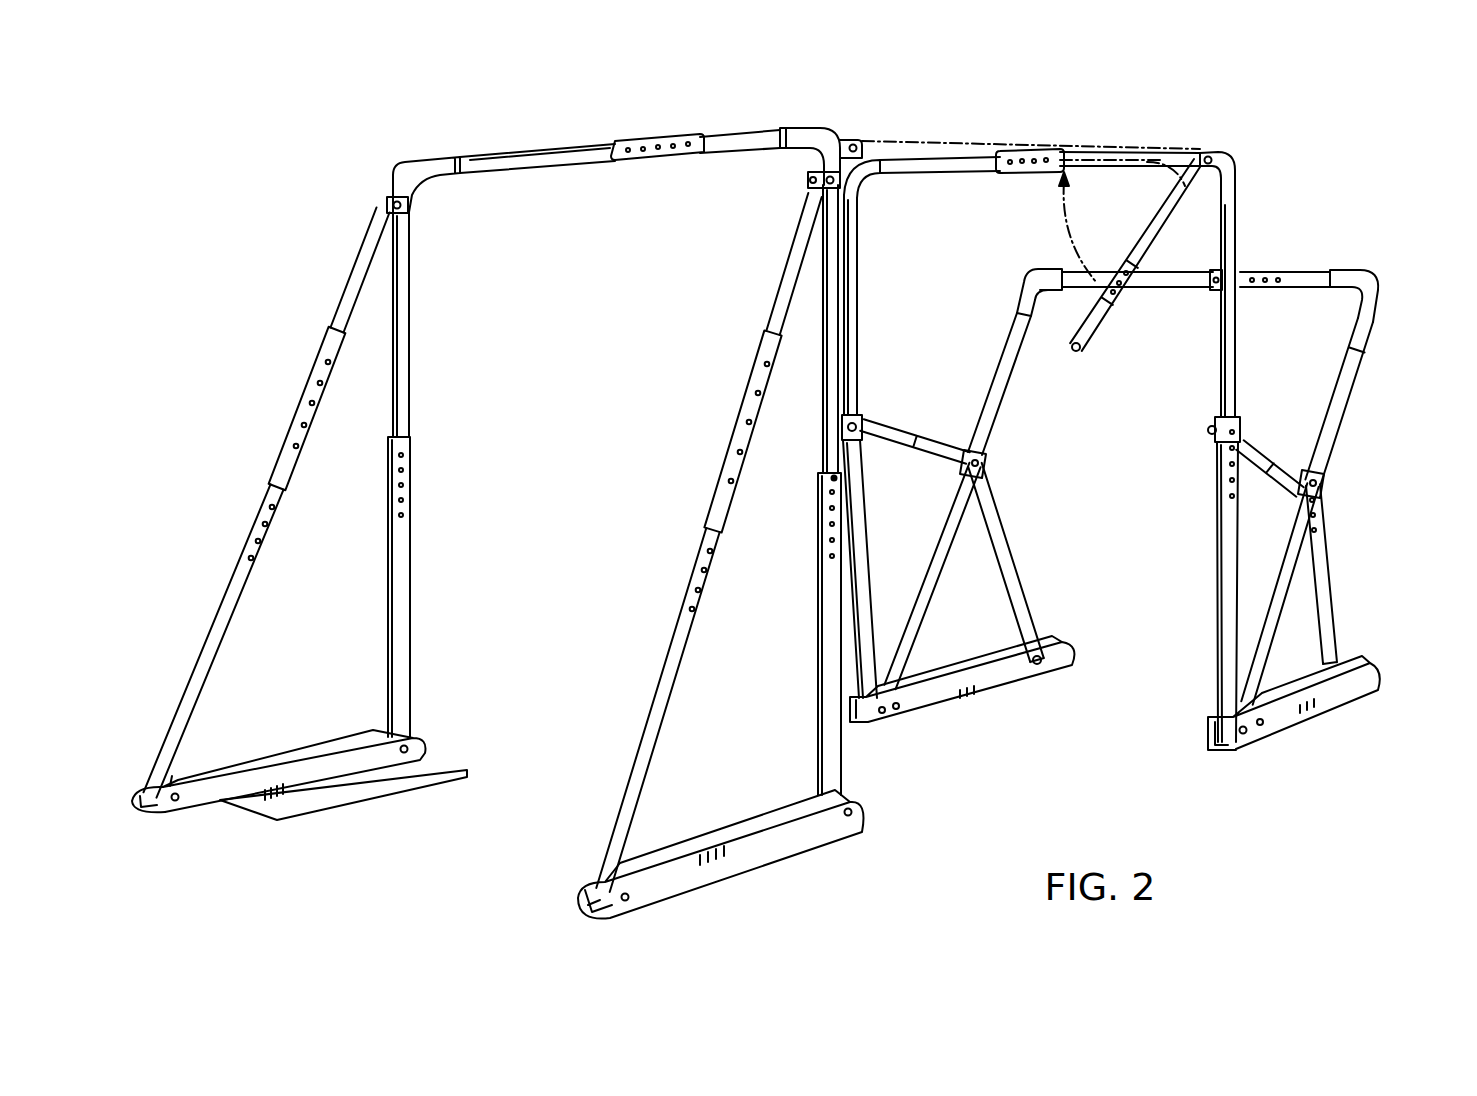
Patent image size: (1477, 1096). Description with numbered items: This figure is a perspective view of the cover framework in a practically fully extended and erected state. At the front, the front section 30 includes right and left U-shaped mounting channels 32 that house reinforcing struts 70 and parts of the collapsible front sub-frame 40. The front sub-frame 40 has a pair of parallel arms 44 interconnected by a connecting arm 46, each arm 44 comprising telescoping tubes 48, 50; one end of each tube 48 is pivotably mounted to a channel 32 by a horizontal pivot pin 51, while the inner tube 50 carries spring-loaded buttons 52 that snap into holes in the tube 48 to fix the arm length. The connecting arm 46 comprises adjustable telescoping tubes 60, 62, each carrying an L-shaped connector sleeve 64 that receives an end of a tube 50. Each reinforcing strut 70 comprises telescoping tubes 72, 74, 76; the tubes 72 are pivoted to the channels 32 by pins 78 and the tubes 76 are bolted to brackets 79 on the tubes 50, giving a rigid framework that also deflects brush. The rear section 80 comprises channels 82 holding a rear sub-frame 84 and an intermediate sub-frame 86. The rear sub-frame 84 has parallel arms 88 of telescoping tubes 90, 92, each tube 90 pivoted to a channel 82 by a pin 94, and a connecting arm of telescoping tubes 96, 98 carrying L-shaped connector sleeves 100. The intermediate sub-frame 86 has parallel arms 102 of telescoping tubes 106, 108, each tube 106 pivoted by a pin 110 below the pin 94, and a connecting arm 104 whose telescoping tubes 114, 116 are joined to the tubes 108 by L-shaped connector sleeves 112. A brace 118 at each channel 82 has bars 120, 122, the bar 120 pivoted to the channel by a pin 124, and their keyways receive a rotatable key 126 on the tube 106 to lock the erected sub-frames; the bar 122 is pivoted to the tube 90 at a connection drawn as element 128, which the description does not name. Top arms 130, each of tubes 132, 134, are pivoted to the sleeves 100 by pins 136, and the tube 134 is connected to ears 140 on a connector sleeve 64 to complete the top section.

The front section 30 is at (655, 108).
The mounting channel 32 is at (425, 738).
The front sub-frame 40 is at (614, 490).
The arm 44 is at (412, 532).
The connecting arm 46 is at (712, 153).
The telescoping tube 48 is at (410, 656).
The telescoping tube 50 is at (412, 340).
The horizontal pivot pin 51 is at (427, 753).
The spring-loaded button 52 is at (836, 488).
The telescoping tube 60 is at (550, 152).
The telescoping tube 62 is at (700, 140).
The L-shaped connector sleeve 64 is at (430, 162).
The reinforcing strut 70 is at (483, 542).
The telescoping tube 72 is at (212, 628).
The telescoping tube 74 is at (302, 383).
The telescoping tube 76 is at (352, 265).
The pin 78 is at (200, 800).
The bracket 79 is at (388, 190).
The rear section 80 is at (1159, 474).
The channel 82 is at (993, 680).
The rear sub-frame 84 is at (1052, 150).
The intermediate sub-frame 86 is at (1335, 455).
The arm 88 is at (862, 350).
The telescoping tube 90 is at (865, 590).
The telescoping tube 92 is at (1232, 307).
The pin 94 is at (1022, 150).
The telescoping tube 96 is at (940, 172).
The telescoping tube 98 is at (1085, 174).
The L-shaped connector sleeve 100 is at (878, 158).
The arm 102 is at (1005, 415).
The connecting arm 104 is at (1318, 268).
The telescoping tube 106 is at (945, 500).
The telescoping tube 108 is at (1370, 335).
The pin 110 is at (1262, 723).
The L-shaped connector sleeve 112 is at (1380, 278).
The telescoping tube 114 is at (1078, 275).
The telescoping tube 116 is at (1250, 272).
The brace 118 is at (1012, 540).
The bar 120 is at (1020, 590).
The bar 122 is at (940, 443).
The pin 124 is at (1068, 663).
The rotatable key 126 is at (988, 465).
The post hub 128 is at (870, 417).
The top arm 130 is at (1125, 296).
The tube 132 is at (1145, 150).
The tube 134 is at (1078, 340).
The pin 136 is at (1222, 152).
The ears 140 is at (855, 138).